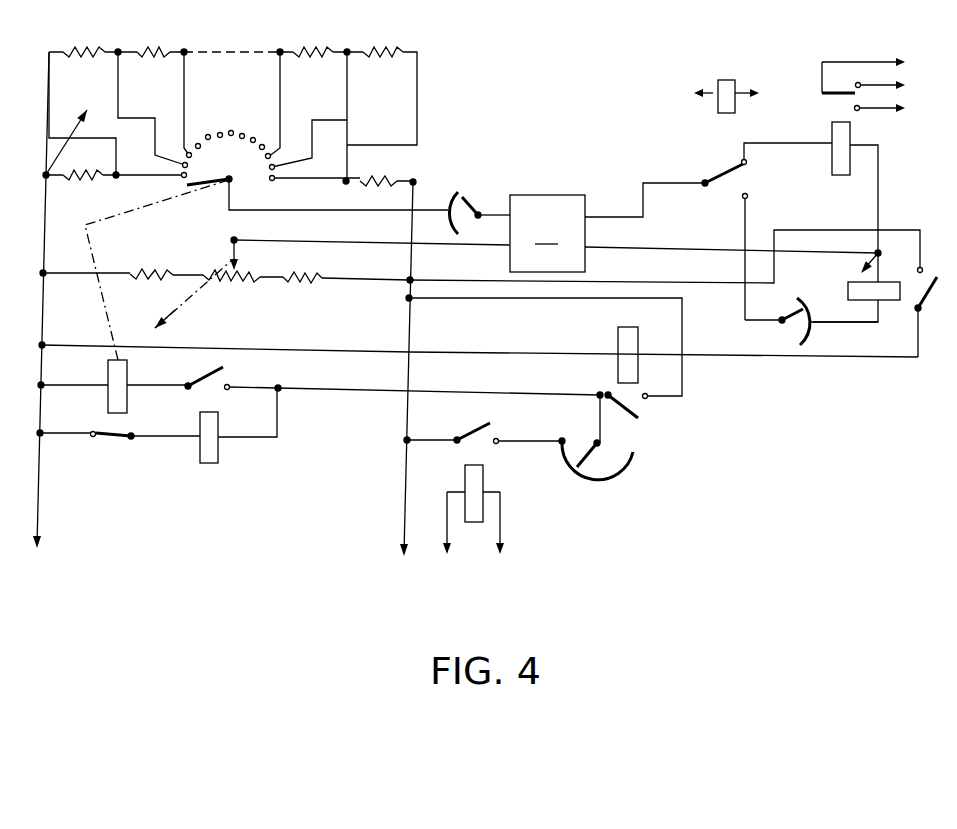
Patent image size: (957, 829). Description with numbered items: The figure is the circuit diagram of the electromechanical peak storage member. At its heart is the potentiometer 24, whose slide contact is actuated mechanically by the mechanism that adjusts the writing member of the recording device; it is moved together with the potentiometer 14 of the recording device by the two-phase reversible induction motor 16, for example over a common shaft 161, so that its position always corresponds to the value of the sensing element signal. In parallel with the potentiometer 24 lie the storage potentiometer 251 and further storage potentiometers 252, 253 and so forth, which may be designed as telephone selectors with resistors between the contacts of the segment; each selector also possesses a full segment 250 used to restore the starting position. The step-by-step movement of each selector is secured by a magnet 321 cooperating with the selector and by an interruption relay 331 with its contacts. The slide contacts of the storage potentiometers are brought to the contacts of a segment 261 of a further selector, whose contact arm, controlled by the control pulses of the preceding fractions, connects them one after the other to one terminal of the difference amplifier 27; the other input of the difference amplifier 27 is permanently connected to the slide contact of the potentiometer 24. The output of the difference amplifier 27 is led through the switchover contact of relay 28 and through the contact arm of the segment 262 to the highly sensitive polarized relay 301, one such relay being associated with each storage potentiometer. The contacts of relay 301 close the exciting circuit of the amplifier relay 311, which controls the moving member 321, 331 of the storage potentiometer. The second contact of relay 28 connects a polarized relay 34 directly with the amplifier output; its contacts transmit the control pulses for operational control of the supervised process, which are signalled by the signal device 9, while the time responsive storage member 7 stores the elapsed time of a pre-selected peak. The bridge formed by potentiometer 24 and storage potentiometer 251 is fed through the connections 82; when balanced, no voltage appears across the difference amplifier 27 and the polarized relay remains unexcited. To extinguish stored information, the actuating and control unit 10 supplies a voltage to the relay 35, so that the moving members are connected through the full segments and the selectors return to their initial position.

The time responsive storage member 7 is at (877, 75).
The signal device 9 is at (890, 100).
The actuating and control unit 10 is at (611, 327).
The potentiometer 14 is at (143, 320).
The two-phase reversible induction motor 16 is at (143, 320).
The potentiometer 24 is at (243, 263).
The difference amplifier 27 is at (547, 233).
The relay 28 is at (730, 163).
The polarized relay 34 is at (852, 133).
The relay 35 is at (490, 463).
The connections 82 is at (38, 518).
The common shaft 161 is at (178, 306).
The full segment 250 is at (610, 448).
The storage potentiometer 251 is at (243, 182).
The storage potentiometer 252 is at (413, 182).
The storage potentiometer 253 is at (284, 116).
The segment 261 is at (467, 193).
The segment 262 is at (795, 325).
The polarized relay 301 is at (890, 302).
The amplifier relay 311 is at (618, 333).
The magnet 321 is at (127, 368).
The interruption relay 331 is at (218, 453).